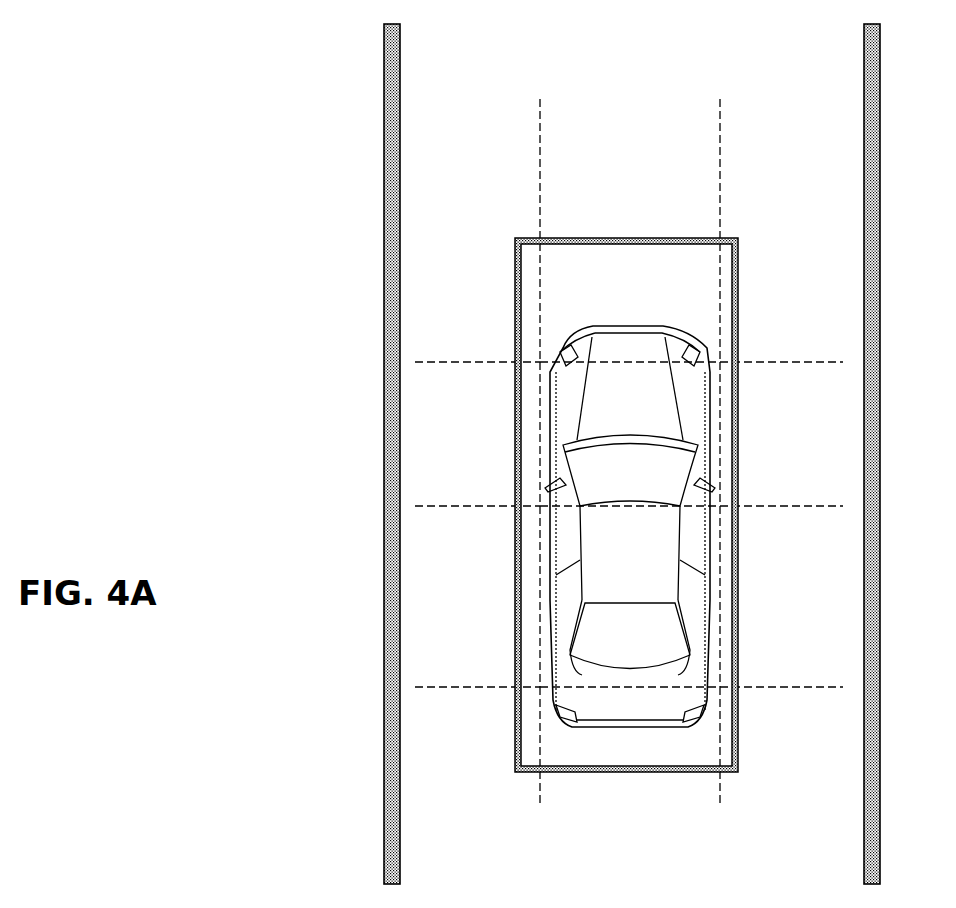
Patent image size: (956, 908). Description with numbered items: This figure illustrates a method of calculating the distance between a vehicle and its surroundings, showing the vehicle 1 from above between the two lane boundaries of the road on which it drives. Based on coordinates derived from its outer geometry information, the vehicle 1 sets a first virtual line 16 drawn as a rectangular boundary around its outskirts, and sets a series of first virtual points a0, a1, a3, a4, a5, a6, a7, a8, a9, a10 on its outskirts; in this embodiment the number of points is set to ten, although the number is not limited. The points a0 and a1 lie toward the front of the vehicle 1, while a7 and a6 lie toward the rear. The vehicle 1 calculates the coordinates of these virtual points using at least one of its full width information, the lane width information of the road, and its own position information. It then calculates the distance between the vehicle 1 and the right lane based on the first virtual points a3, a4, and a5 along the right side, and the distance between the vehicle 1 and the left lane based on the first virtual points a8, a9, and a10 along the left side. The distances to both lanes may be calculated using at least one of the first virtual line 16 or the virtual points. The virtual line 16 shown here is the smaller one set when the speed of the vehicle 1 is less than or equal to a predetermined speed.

The first virtual line 16 is at (618, 238).
The vehicle 1 is at (620, 788).
The first virtual point a0 is at (553, 230).
The first virtual point a1 is at (706, 230).
The first virtual point a3 is at (781, 377).
The first virtual point a4 is at (781, 519).
The first virtual point a5 is at (781, 699).
The first virtual point a6 is at (707, 745).
The first virtual point a7 is at (550, 745).
The first virtual point a8 is at (477, 699).
The first virtual point a9 is at (477, 519).
The first virtual point a10 is at (477, 381).